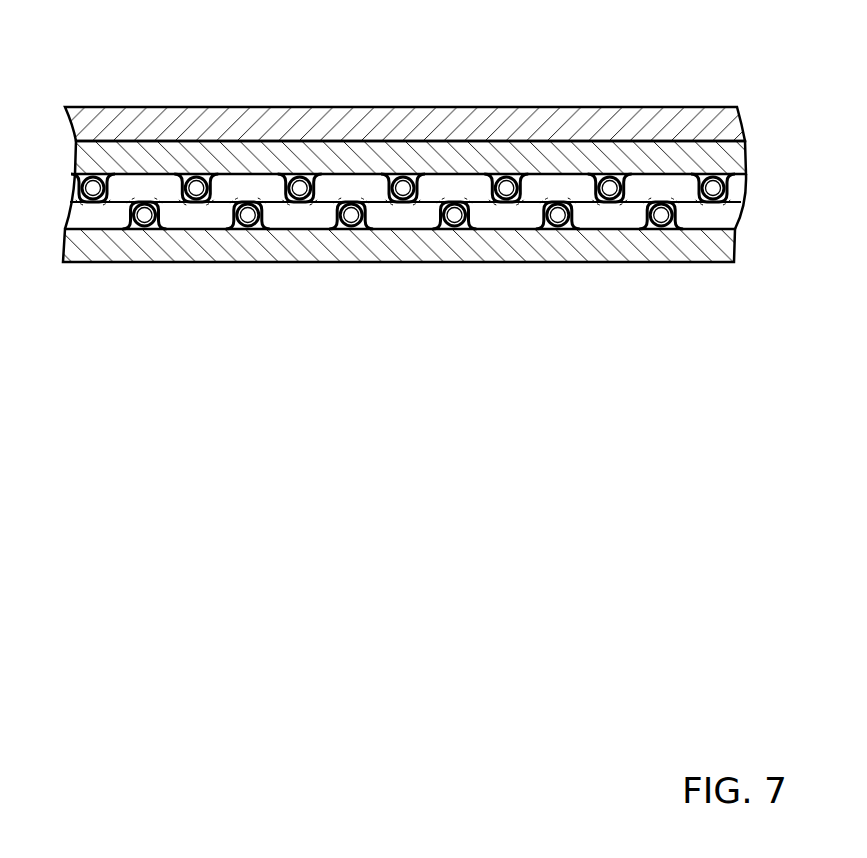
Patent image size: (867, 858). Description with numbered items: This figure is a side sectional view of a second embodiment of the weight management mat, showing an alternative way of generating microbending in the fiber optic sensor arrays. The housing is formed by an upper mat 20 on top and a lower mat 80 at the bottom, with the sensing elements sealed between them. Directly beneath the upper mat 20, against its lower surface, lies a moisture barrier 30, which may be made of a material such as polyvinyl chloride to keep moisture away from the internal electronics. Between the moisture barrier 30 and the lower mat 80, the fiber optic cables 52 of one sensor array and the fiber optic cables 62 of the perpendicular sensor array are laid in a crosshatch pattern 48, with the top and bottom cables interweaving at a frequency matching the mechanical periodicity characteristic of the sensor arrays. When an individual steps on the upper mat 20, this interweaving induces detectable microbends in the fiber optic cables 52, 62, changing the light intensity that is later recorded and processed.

The upper mat 20 is at (523, 107).
The moisture barrier 30 is at (350, 162).
The crosshatch pattern 48 is at (405, 215).
The fiber optic cables 52 is at (612, 185).
The fiber optic cables 62 is at (560, 217).
The lower mat 80 is at (218, 247).